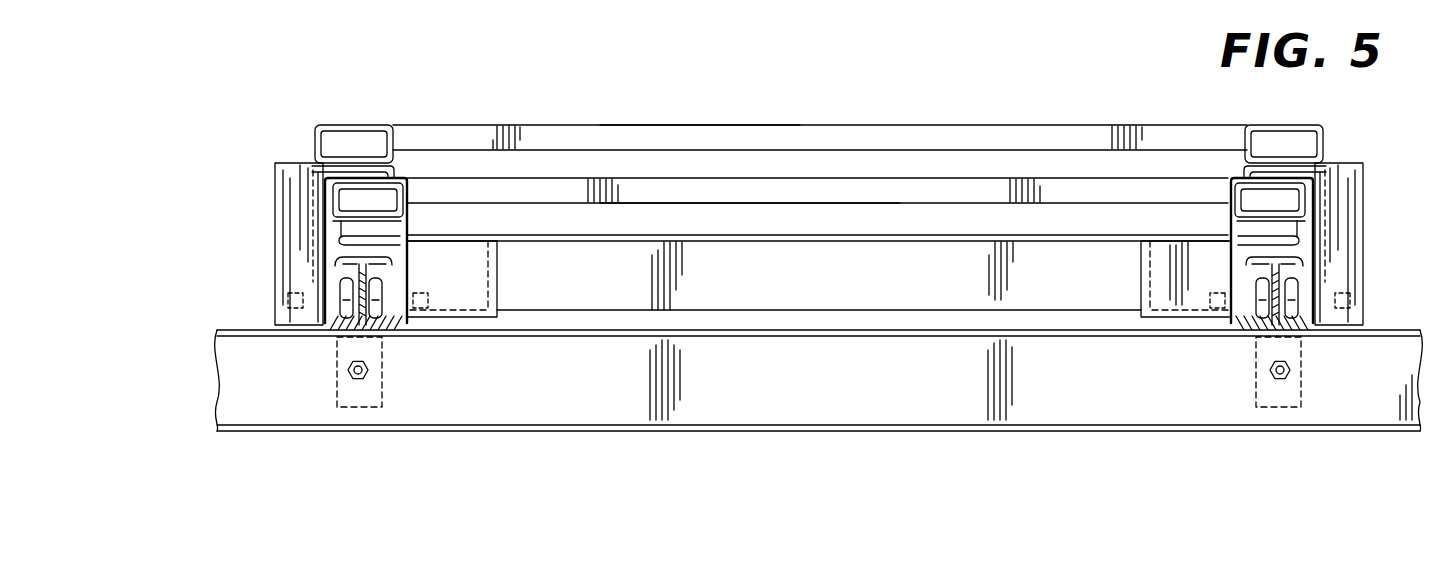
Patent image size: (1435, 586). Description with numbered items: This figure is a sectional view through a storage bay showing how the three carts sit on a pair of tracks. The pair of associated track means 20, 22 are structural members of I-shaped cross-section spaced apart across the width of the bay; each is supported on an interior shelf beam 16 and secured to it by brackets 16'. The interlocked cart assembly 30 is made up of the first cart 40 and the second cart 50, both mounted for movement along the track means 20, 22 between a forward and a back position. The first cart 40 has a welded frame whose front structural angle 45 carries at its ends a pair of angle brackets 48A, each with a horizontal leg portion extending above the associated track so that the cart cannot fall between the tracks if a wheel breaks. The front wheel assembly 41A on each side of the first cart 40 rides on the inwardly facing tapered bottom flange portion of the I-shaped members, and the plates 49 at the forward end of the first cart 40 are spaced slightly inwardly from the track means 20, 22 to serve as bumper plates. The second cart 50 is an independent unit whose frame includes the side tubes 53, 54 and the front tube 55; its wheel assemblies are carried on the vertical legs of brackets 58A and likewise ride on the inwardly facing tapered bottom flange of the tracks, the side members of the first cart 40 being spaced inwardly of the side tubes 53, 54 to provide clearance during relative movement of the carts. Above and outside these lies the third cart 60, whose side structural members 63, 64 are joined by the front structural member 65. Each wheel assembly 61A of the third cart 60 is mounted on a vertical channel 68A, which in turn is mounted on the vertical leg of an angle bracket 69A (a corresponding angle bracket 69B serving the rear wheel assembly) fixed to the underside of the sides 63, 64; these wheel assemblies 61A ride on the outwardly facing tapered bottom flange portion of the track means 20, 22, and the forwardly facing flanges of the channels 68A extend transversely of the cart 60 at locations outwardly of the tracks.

The interior shelf beam 16 is at (819, 402).
The brackets 16' is at (819, 378).
The track means 20 is at (1303, 257).
The track means 22 is at (335, 258).
The interlocked cart assembly 30 is at (852, 313).
The first cart 40 is at (972, 235).
The front wheel assembly 41A is at (400, 325).
The front structural angle 45 is at (698, 295).
The angle brackets 48A is at (397, 262).
The plates 49 is at (483, 302).
The second cart 50 is at (833, 178).
The side tube 53 is at (408, 188).
The side tube 54 is at (1230, 188).
The front tube 55 is at (713, 190).
The brackets 58A is at (397, 234).
The third cart 60 is at (777, 124).
The wheel assembly 61A is at (340, 315).
The side structural member 63 is at (373, 126).
The side structural member 64 is at (1293, 123).
The front structural member 65 is at (690, 97).
The vertical channel 68A is at (287, 200).
The angle bracket 69A is at (313, 170).
The angle bracket 69B is at (1262, 168).